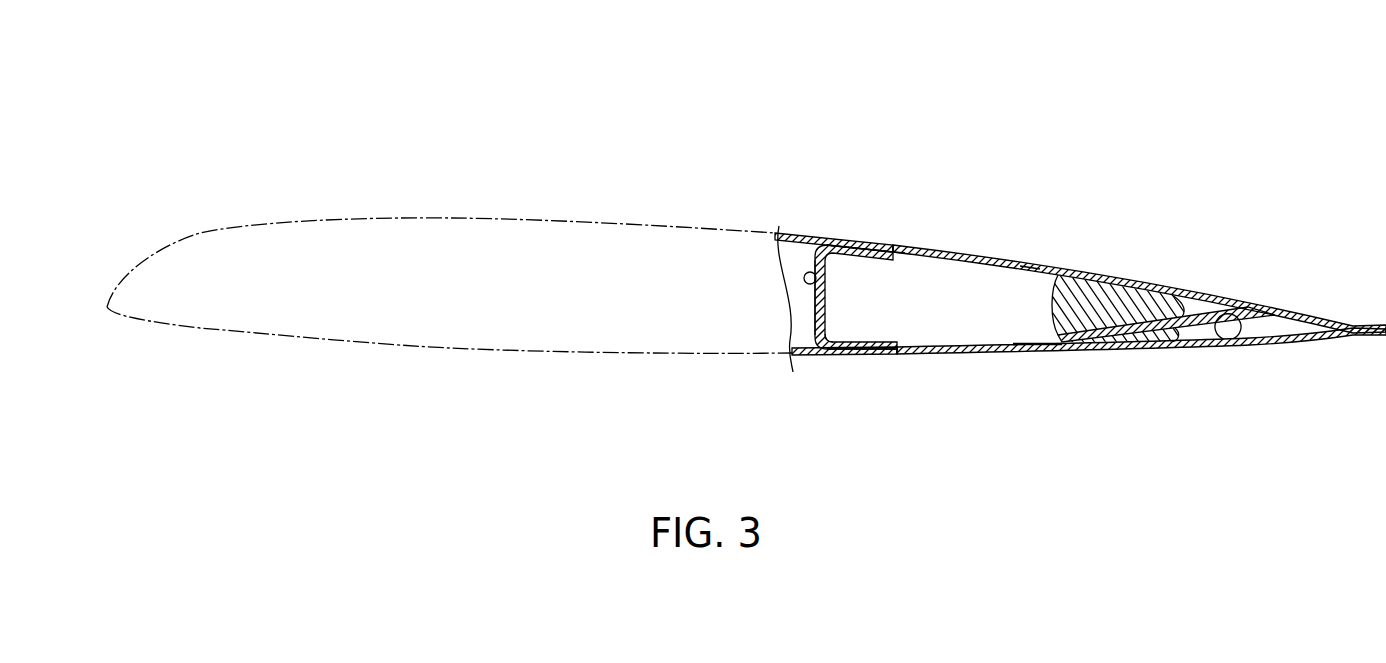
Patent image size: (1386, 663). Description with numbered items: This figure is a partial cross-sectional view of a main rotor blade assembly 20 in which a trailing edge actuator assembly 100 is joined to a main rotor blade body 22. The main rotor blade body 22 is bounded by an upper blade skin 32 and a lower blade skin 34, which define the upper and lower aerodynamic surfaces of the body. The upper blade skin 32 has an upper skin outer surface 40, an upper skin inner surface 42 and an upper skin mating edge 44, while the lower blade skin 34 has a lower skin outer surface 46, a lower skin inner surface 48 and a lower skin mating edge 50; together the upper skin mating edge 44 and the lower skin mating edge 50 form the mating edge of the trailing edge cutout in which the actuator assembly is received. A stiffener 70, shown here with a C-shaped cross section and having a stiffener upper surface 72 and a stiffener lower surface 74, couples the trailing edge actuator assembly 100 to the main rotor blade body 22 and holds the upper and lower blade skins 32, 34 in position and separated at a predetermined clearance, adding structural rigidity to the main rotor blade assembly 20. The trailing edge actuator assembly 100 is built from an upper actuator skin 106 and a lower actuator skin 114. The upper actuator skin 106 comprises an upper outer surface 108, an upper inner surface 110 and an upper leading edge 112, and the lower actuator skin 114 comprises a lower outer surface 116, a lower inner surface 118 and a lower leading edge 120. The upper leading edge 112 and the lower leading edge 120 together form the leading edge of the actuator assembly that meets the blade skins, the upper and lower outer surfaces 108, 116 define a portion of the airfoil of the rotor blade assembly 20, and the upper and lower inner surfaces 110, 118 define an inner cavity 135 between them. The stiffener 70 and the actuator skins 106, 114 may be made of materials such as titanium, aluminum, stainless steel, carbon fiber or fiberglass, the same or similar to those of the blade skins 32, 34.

The main rotor blade assembly 20 is at (968, 85).
The main rotor blade body 22 is at (691, 143).
The upper blade skin 32 is at (460, 217).
The lower blade skin 34 is at (568, 353).
The upper skin outer surface 40 is at (515, 219).
The upper skin inner surface 42 is at (779, 242).
The upper skin mating edge 44 is at (878, 240).
The lower skin outer surface 46 is at (508, 351).
The lower skin inner surface 48 is at (823, 346).
The lower skin mating edge 50 is at (877, 358).
The stiffener 70 is at (826, 273).
The stiffener upper surface 72 is at (840, 244).
The stiffener lower surface 74 is at (835, 352).
The trailing edge actuator assembly 100 is at (1218, 197).
The upper actuator skin 106 is at (1030, 263).
The upper outer surface 108 is at (1060, 285).
The upper inner surface 110 is at (1027, 270).
The upper leading edge 112 is at (896, 240).
The lower actuator skin 114 is at (1084, 355).
The lower outer surface 116 is at (1063, 350).
The lower inner surface 118 is at (1005, 342).
The lower leading edge 120 is at (898, 358).
The inner cavity 135 is at (900, 258).